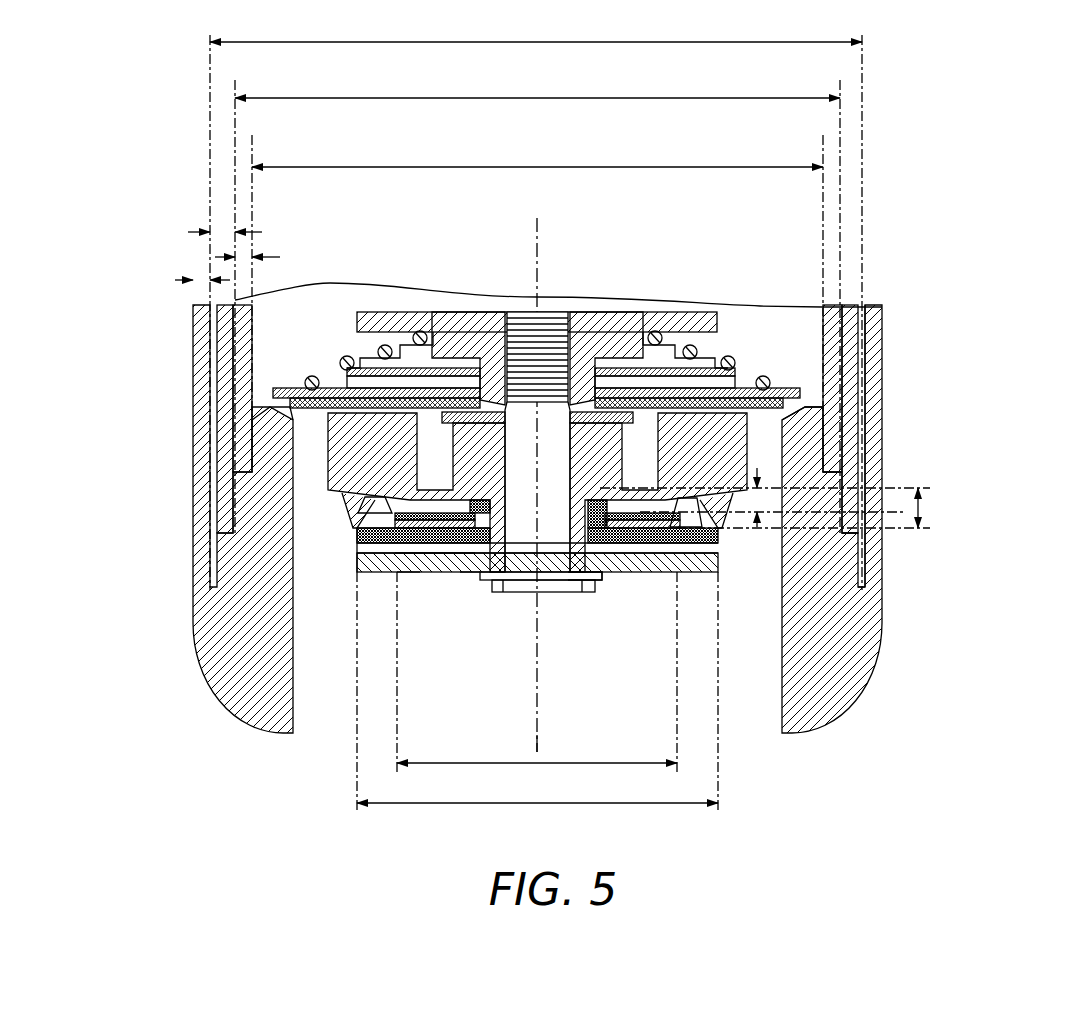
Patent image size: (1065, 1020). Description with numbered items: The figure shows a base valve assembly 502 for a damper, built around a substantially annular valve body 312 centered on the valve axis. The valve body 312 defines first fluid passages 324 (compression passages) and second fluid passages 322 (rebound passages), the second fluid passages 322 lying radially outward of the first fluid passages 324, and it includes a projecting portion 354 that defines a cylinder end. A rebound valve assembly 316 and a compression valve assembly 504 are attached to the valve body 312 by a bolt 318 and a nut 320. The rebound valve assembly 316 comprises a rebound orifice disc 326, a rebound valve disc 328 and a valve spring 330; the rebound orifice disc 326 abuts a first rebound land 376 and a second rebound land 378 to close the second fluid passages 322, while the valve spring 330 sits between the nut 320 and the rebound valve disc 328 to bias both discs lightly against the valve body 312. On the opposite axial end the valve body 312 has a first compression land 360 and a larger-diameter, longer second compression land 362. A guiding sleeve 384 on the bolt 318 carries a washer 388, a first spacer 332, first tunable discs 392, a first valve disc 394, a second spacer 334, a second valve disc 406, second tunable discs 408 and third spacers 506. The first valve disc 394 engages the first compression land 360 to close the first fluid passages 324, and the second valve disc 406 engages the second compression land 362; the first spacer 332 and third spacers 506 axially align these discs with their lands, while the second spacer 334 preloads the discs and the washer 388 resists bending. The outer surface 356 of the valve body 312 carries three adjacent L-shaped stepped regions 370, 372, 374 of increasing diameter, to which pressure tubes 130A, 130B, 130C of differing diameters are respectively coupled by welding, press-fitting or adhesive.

The valve body 312 is at (350, 445).
The rebound valve assembly 316 is at (328, 318).
The bolt 318 is at (505, 585).
The nut 320 is at (677, 330).
The second fluid passages 322 is at (757, 432).
The first fluid passages 324 is at (645, 440).
The rebound orifice disc 326 is at (800, 452).
The rebound valve disc 328 is at (775, 398).
The valve spring 330 is at (772, 400).
The first spacer 332 is at (612, 503).
The second spacer 334 is at (445, 560).
The projecting portion 354 is at (862, 660).
The outer surface 356 is at (193, 625).
The first compression land 360 is at (662, 565).
The second compression land 362 is at (718, 528).
The stepped region 370 is at (832, 470).
The stepped region 372 is at (848, 533).
The stepped region 374 is at (866, 588).
The first rebound land 376 is at (378, 412).
The second rebound land 378 is at (265, 412).
The guiding sleeve 384 is at (572, 583).
The washer 388 is at (355, 542).
The first tunable discs 392 is at (400, 530).
The first valve disc 394 is at (428, 503).
The second valve disc 406 is at (392, 518).
The second tunable discs 408 is at (355, 570).
The base valve assembly 502 is at (418, 622).
The compression valve assembly 504 is at (478, 612).
The third spacers 506 is at (425, 555).
The pressure tube 130A is at (830, 365).
The pressure tube 130B is at (850, 398).
The pressure tube 130C is at (875, 445).